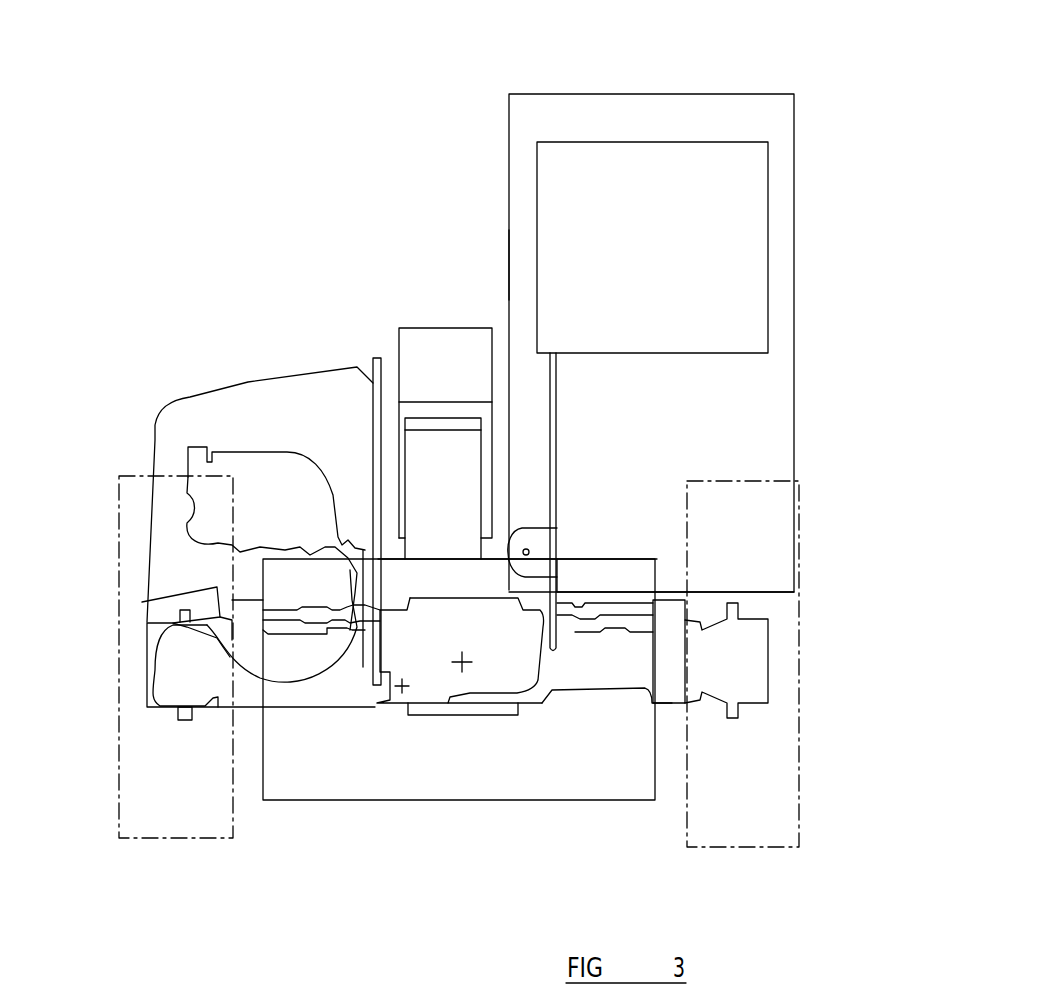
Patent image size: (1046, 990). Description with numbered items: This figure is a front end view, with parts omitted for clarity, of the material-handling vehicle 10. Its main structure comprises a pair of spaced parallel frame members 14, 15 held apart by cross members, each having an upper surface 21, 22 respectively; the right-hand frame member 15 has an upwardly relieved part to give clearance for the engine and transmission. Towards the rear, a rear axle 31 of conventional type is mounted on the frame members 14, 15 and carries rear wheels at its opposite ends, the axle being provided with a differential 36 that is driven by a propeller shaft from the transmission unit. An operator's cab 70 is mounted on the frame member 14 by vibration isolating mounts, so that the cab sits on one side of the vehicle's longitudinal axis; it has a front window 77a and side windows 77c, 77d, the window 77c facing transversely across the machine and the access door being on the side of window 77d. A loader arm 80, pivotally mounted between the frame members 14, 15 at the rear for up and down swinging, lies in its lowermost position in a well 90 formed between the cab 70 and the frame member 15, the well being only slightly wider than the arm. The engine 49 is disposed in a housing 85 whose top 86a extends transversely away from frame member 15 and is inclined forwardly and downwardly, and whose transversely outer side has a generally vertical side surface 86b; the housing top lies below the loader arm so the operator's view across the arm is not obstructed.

The material-handling vehicle 10 is at (262, 165).
The frame member 14 is at (557, 377).
The frame member 15 is at (369, 350).
The upper surface 21 is at (554, 353).
The upper surface 22 is at (381, 358).
The rear axle 31 is at (588, 685).
The differential 36 is at (495, 715).
The engine 49 is at (242, 446).
The operator's cab 70 is at (499, 183).
The front window 77a is at (663, 178).
The side window 77c is at (509, 268).
The side window 77d is at (800, 268).
The loader arm 80 is at (427, 328).
The housing 85 is at (242, 375).
The top 86a is at (303, 375).
The side surface 86b is at (155, 460).
The well 90 is at (498, 410).